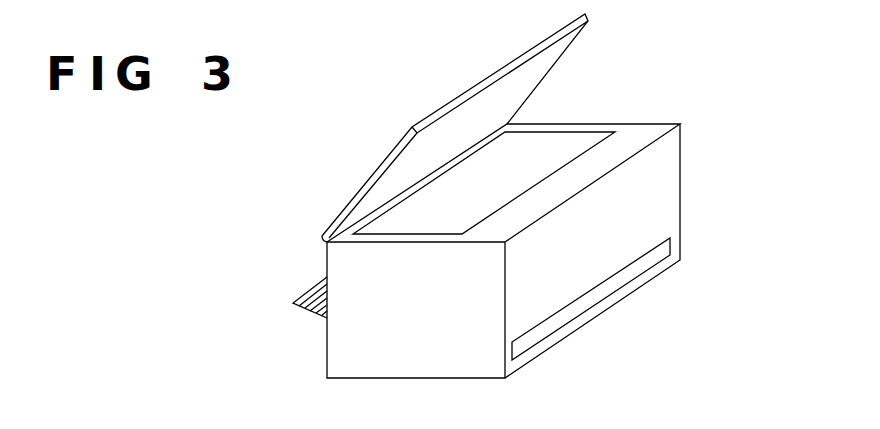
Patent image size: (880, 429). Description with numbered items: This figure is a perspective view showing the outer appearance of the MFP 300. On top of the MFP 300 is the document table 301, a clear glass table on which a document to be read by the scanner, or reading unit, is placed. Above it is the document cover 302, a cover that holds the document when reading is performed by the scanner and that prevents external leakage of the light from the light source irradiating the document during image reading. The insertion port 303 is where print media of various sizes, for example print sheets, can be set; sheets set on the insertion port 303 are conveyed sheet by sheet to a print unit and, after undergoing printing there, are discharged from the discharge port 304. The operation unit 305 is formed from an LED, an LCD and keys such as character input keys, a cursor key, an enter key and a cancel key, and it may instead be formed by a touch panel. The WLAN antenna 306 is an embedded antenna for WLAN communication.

The MFP 300 is at (333, 363).
The document table 301 is at (570, 143).
The document cover 302 is at (374, 172).
The insertion port 303 is at (302, 292).
The discharge port 304 is at (625, 282).
The operation unit 305 is at (575, 178).
The WLAN antenna 306 is at (530, 240).